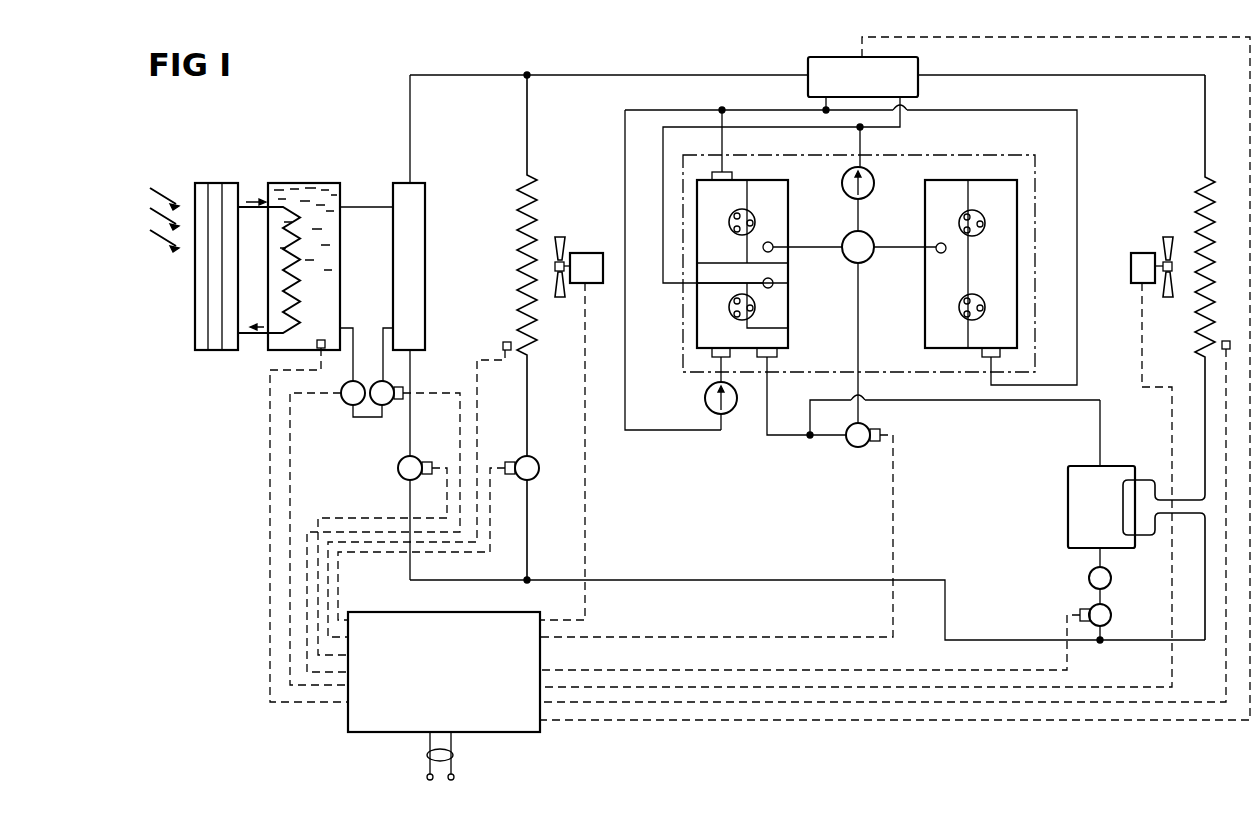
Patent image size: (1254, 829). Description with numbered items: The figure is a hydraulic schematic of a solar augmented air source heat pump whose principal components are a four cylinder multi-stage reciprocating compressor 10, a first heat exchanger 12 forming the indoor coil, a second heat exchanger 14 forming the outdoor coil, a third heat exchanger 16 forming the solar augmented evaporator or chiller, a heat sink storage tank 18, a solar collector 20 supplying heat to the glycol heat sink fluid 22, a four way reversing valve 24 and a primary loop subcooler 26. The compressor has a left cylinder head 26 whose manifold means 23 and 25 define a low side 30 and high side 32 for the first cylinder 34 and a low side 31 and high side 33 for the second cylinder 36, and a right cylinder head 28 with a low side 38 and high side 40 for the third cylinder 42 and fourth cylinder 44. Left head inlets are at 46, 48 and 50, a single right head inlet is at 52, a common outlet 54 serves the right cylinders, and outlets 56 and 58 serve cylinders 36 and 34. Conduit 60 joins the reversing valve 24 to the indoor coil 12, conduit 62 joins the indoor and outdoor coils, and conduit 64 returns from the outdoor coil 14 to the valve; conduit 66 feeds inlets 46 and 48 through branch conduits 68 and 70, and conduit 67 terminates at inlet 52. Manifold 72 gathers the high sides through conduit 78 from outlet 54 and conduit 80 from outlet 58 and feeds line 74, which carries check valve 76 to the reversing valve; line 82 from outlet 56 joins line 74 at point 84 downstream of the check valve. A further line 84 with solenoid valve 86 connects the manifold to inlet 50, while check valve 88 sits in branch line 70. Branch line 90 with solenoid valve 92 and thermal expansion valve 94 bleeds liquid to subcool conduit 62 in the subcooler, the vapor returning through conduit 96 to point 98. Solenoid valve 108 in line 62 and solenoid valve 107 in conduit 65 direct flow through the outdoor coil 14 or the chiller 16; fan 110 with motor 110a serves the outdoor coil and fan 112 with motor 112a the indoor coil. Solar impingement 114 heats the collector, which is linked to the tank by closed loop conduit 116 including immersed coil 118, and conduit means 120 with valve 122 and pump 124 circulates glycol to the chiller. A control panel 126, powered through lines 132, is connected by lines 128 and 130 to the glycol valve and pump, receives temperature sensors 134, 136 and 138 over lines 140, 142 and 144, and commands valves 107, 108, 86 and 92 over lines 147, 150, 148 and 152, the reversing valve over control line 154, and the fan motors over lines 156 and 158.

The reciprocating compressor 10 is at (1036, 218).
The first heat exchanger 12 is at (1211, 220).
The second heat exchanger 14 is at (519, 228).
The third heat exchanger 16 is at (425, 208).
The heat sink storage tank 18 is at (322, 184).
The solar collector 20 is at (218, 352).
The heat sink fluid 22 is at (300, 192).
The manifold means 23 is at (755, 253).
The four way reversing valve 24 is at (918, 68).
The manifold means 25 is at (791, 263).
The primary loop subcooler 26 is at (792, 206).
The right cylinder head 28 is at (1020, 268).
The low side 30 is at (697, 205).
The low side 31 is at (697, 302).
The high side 32 is at (788, 183).
The high side 33 is at (752, 273).
The first cylinder 34 is at (757, 222).
The second cylinder 36 is at (744, 320).
The low side 38 is at (925, 298).
The high side 40 is at (992, 188).
The third cylinder 42 is at (985, 226).
The fourth cylinder 44 is at (980, 319).
The compressor inlet 46 is at (733, 177).
The compressor inlet 48 is at (716, 356).
The compressor inlet 50 is at (773, 356).
The inlet 52 is at (1006, 361).
The common outlet 54 is at (934, 252).
The outlet 56 is at (776, 283).
The outlet 58 is at (777, 247).
The conduit 60 is at (1029, 75).
The conduit 62 is at (768, 586).
The conduit 64 is at (583, 75).
The conduit 65 is at (463, 75).
The conduit 66 is at (626, 350).
The conduit 67 is at (1078, 226).
The branch conduit 68 is at (730, 140).
The branch conduit 70 is at (721, 431).
The manifold 72 is at (870, 243).
The conduit 74 is at (856, 219).
The check valve 76 is at (873, 181).
The conduit 78 is at (895, 247).
The conduit 80 is at (832, 239).
The conduit 82 is at (787, 127).
The conduit 84 is at (868, 140).
The solenoid operated control valve 86 is at (853, 445).
The check valve 88 is at (706, 399).
The branch conduit 90 is at (1106, 554).
The solenoid operated control valve 92 is at (1111, 622).
The thermal expansion valve 94 is at (1112, 583).
The vapor return conduit 96 is at (1101, 456).
The intersection point 98 is at (811, 438).
The solenoid operated control valve 107 is at (398, 472).
The solenoid operated control valve 108 is at (534, 460).
The fan 110 is at (567, 237).
The fan motor 110a is at (587, 253).
The fan 112 is at (1163, 242).
The motor 112a is at (1137, 283).
The solar impingement 114 is at (160, 189).
The closed loop conduit 116 is at (245, 336).
The coil 118 is at (303, 280).
The conduit means 120 is at (380, 207).
The solenoid operated control valve 122 is at (346, 404).
The pump 124 is at (386, 405).
The control panel 126 is at (495, 612).
The line 128 is at (459, 392).
The line 130 is at (292, 491).
The lines 132 is at (455, 755).
The temperature sensor 134 is at (321, 340).
The temperature sensor 136 is at (503, 344).
The temperature sensor 138 is at (1236, 336).
The line 140 is at (326, 705).
The line 142 is at (330, 593).
The line 144 is at (1203, 705).
The line 147 is at (365, 518).
The line 148 is at (895, 484).
The line 150 is at (340, 571).
The line 152 is at (1068, 665).
The control line 154 is at (1180, 721).
The line 156 is at (585, 568).
The line 158 is at (1157, 683).